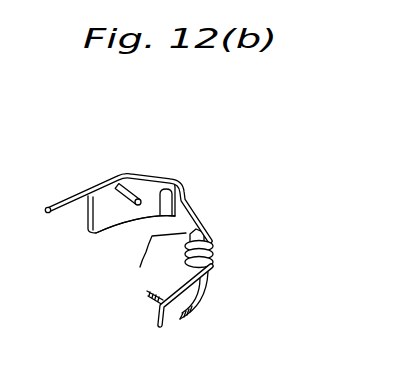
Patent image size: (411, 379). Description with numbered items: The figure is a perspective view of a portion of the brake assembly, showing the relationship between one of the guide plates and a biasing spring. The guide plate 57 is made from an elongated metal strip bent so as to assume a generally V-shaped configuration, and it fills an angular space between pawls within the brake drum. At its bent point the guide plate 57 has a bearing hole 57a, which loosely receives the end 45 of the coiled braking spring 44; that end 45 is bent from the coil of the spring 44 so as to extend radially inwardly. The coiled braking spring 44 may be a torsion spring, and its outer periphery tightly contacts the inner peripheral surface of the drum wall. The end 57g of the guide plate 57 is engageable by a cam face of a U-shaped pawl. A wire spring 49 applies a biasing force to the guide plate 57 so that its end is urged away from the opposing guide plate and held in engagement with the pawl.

The coiled braking spring 44 is at (58, 198).
The end of the spring 45 is at (126, 198).
The wire spring 49 is at (216, 240).
The guide plate 57 is at (106, 212).
The end of the guide plate 57g is at (83, 223).
The bearing hole 57a is at (117, 218).